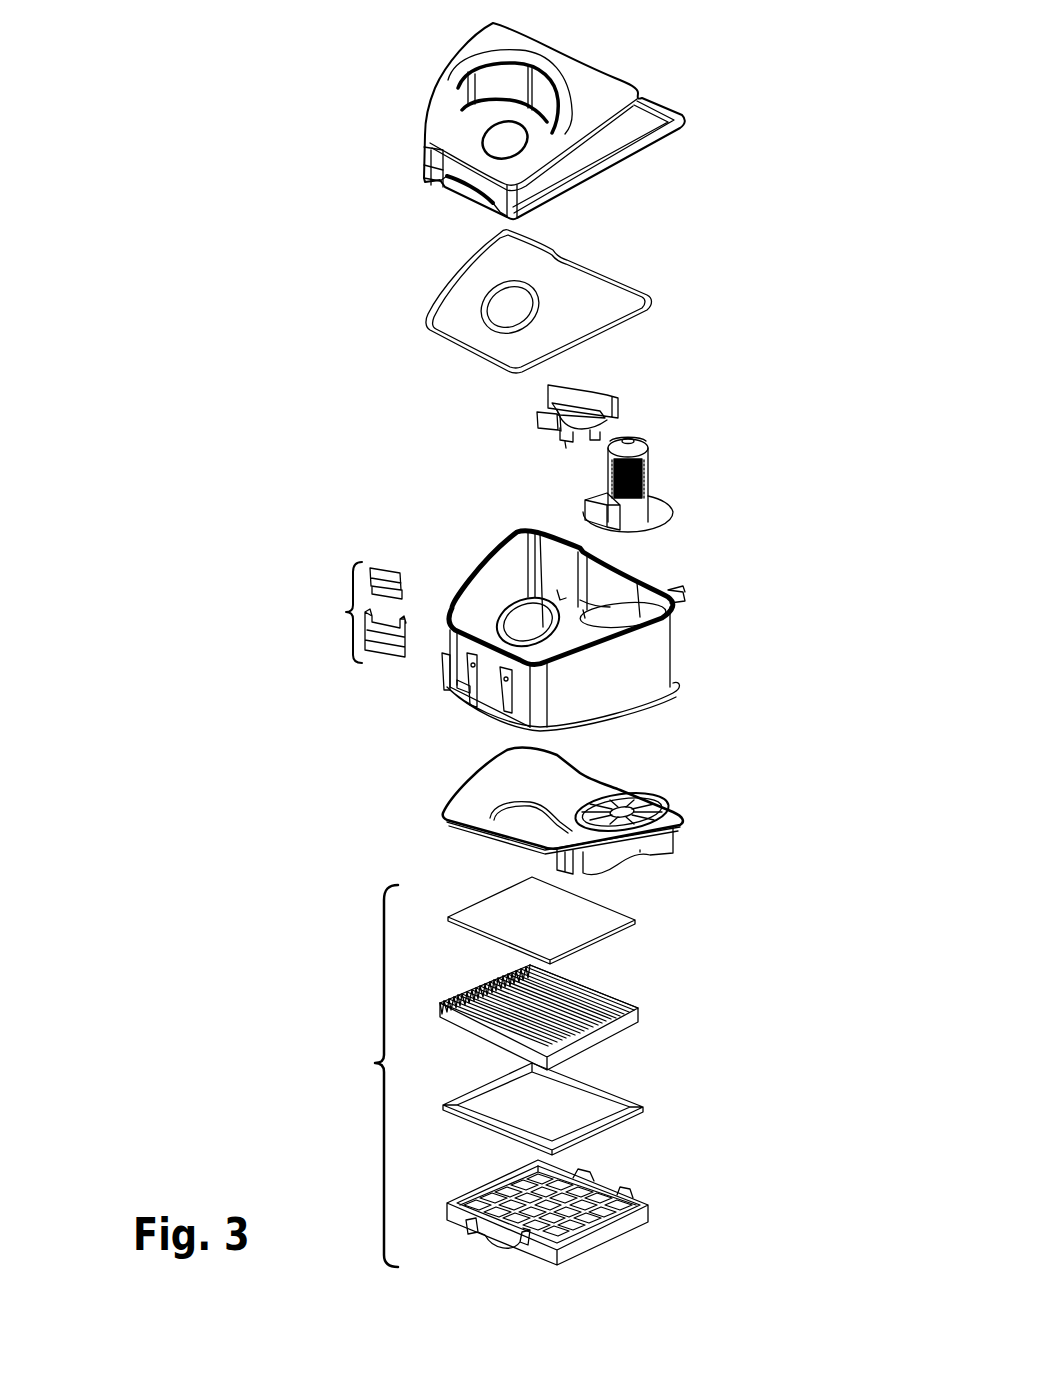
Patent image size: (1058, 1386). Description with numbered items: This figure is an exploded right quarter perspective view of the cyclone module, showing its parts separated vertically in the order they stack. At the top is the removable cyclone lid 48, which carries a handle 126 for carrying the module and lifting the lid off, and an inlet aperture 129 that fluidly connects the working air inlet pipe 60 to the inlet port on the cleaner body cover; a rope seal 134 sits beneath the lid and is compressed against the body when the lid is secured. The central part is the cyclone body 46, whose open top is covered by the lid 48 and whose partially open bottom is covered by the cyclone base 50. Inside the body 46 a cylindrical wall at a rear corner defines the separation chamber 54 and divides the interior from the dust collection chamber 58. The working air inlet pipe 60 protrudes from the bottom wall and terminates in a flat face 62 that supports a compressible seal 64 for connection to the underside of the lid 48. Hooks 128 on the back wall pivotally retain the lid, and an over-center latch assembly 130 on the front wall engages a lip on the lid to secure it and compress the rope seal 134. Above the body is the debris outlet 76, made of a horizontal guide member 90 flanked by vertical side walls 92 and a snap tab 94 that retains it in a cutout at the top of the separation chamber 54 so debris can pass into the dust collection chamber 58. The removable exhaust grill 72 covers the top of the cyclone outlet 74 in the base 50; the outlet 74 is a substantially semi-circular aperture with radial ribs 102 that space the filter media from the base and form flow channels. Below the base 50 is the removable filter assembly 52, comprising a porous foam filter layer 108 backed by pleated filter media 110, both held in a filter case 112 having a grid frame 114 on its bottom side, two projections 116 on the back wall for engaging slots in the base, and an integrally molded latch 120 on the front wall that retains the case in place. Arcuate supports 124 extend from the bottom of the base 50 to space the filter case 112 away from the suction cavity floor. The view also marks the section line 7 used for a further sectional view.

The section line 7- 7 is at (578, 497).
The cyclone body 46 is at (483, 560).
The cyclone lid 48 is at (650, 113).
The cyclone base 50 is at (470, 790).
The filter assembly 52 is at (365, 1076).
The separation chamber 54 is at (625, 618).
The dust collection chamber 58 is at (562, 597).
The working air inlet pipe 60 is at (522, 632).
The flat face 62 is at (535, 602).
The compressible seal 64 is at (485, 298).
The exhaust grill 72 is at (650, 442).
The cyclone outlet 74 is at (655, 818).
The debris outlet 76 is at (617, 400).
The horizontal guide member 90 is at (547, 407).
The vertical side walls 92 is at (583, 383).
The snap tab 94 is at (627, 420).
The ribs 102 is at (597, 793).
The porous foam filter layer 108 is at (613, 917).
The pleated filter media 110 is at (620, 993).
The filter case 112 is at (447, 1210).
The grid frame 114 is at (610, 1223).
The projections 116 is at (620, 1183).
The latch 120 is at (485, 1240).
The arcuate supports 124 is at (637, 863).
The handle 126 is at (490, 46).
The hooks 128 is at (680, 583).
The inlet aperture 129 is at (498, 147).
The over-center latch assembly 130 is at (351, 612).
The rope seal 134 is at (430, 308).